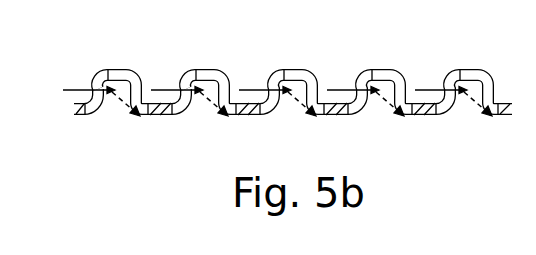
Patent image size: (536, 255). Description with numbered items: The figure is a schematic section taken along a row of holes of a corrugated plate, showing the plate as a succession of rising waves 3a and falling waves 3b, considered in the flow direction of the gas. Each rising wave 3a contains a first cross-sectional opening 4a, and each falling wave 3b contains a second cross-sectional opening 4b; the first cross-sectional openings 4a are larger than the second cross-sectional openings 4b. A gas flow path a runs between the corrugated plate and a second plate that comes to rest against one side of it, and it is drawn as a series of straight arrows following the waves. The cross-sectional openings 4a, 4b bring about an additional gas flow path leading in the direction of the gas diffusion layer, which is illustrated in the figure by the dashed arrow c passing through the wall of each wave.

The first cross-sectional opening 4a is at (89, 69).
The second cross-sectional opening 4b is at (145, 66).
The gas flow path a is at (252, 86).
The rising wave 3a is at (98, 95).
The falling wave 3b is at (125, 102).
The dashed arrow c is at (210, 108).